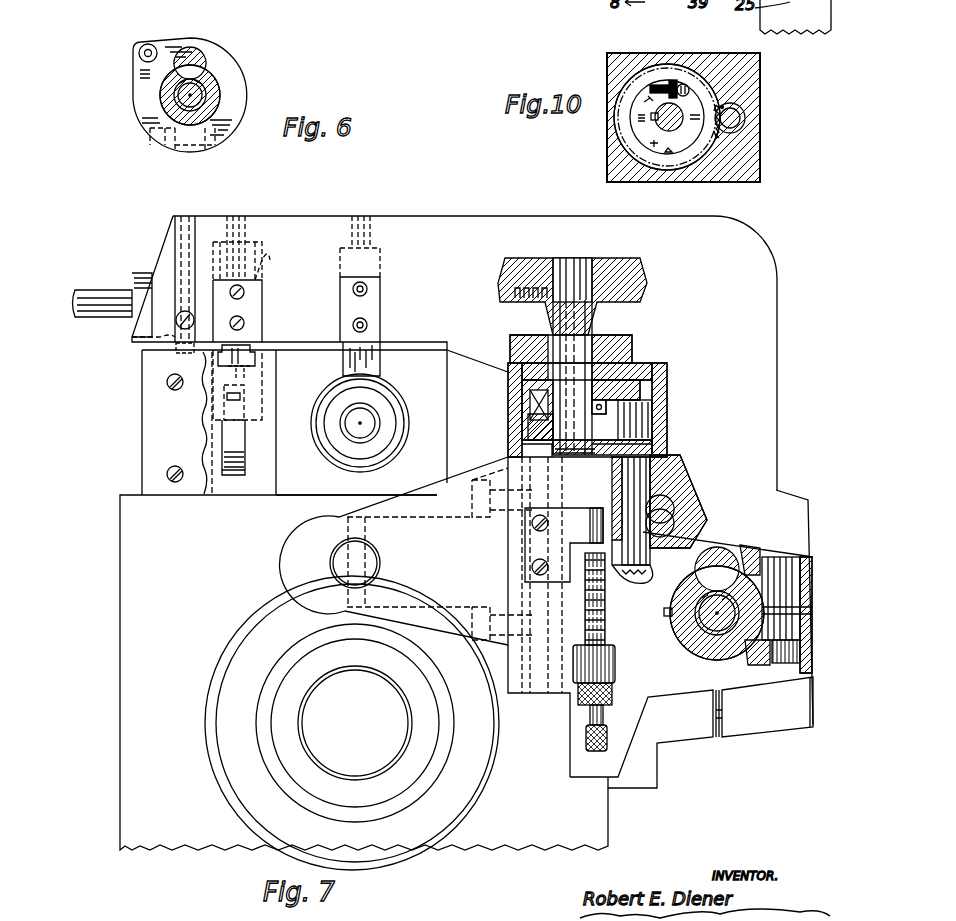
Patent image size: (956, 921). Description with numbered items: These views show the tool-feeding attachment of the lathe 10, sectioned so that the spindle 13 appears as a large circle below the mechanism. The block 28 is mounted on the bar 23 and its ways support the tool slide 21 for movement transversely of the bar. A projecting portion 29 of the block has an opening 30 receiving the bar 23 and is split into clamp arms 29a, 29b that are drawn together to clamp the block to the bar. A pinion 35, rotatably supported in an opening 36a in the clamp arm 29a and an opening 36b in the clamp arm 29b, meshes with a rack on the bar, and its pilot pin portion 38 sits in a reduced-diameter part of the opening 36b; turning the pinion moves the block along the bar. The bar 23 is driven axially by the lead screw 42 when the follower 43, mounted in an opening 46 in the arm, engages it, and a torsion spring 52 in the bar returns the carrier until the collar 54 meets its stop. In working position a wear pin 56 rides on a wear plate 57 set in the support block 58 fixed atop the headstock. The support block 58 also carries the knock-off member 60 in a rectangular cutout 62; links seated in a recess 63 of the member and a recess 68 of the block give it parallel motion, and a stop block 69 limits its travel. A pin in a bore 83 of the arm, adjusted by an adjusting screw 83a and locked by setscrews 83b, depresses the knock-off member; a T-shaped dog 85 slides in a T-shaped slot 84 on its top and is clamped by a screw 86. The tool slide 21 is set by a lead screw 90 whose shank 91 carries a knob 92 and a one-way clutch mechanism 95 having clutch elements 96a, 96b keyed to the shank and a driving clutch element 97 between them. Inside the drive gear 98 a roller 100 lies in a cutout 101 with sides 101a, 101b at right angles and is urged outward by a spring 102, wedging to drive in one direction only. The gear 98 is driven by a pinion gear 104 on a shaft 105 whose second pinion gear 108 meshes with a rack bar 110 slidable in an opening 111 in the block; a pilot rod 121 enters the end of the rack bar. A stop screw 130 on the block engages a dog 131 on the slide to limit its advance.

In FIG. 7, the lathe 10 is at (500, 404).
In FIG. 7, the spindle 13 is at (270, 758).
In FIG. 7, the tool slide 21 is at (570, 715).
In FIG. 6, the bar 23 is at (220, 100).
In FIG. 7, the bar 23 is at (712, 648).
In FIG. 7, the block 28 is at (628, 712).
In FIG. 7, the projecting portion 29 is at (712, 692).
In FIG. 7, the clamp arm 29a is at (814, 580).
In FIG. 7, the clamp arm 29b is at (806, 690).
In FIG. 7, the opening 30 is at (728, 552).
In FIG. 7, the pinion 35 is at (800, 594).
In FIG. 7, the opening 36a is at (796, 555).
In FIG. 7, the opening 36b is at (778, 682).
In FIG. 7, the pilot pin portion 38 is at (802, 647).
In FIG. 7, the lead screw 42 is at (392, 460).
In FIG. 7, the follower 43 is at (378, 366).
In FIG. 7, the opening 46 is at (382, 318).
In FIG. 6, the torsion spring 52 is at (200, 72).
In FIG. 7, the torsion spring 52 is at (680, 640).
In FIG. 6, the collar 54 is at (196, 40).
In FIG. 7, the wear pin 56 is at (130, 340).
In FIG. 7, the wear plate 57 is at (182, 352).
In FIG. 7, the support block 58 is at (242, 490).
In FIG. 7, the knock-off member 60 is at (222, 420).
In FIG. 7, the cutout 62 is at (224, 424).
In FIG. 7, the recess 63 is at (262, 426).
In FIG. 7, the recess 68 is at (220, 458).
In FIG. 7, the stop block 69 is at (140, 476).
In FIG. 7, the bore 83 is at (244, 240).
In FIG. 7, the adjusting screw 83a is at (235, 214).
In FIG. 7, the setscrews 83b is at (245, 321).
In FIG. 7, the T-shaped slot 84 is at (258, 370).
In FIG. 7, the T-shaped dog 85 is at (258, 358).
In FIG. 7, the screw 86 is at (222, 388).
In FIG. 7, the lead screw 90 is at (580, 662).
In FIG. 10, the shank 91 is at (660, 128).
In FIG. 7, the shank 91 is at (600, 338).
In FIG. 7, the knob 92 is at (635, 272).
In FIG. 7, the one-way clutch mechanism 95 is at (612, 382).
In FIG. 7, the clutch element 96a is at (520, 368).
In FIG. 7, the clutch element 96b is at (530, 448).
In FIG. 10, the driving clutch element 97 is at (640, 126).
In FIG. 7, the driving clutch element 97 is at (536, 412).
In FIG. 10, the drive gear 98 is at (615, 140).
In FIG. 7, the drive gear 98 is at (612, 404).
In FIG. 10, the roller 100 is at (672, 88).
In FIG. 10, the cutout 101 is at (690, 90).
In FIG. 10, the side 101a is at (671, 140).
In FIG. 10, the side 101b is at (666, 85).
In FIG. 10, the spring 102 is at (650, 88).
In FIG. 10, the pinion gear 104 is at (740, 126).
In FIG. 7, the pinion gear 104 is at (630, 398).
In FIG. 7, the shaft 105 is at (670, 462).
In FIG. 7, the pinion gear 108 is at (620, 580).
In FIG. 7, the rack bar 110 is at (670, 520).
In FIG. 7, the opening 111 is at (680, 545).
In FIG. 6, the pilot rod 121 is at (163, 18).
In FIG. 7, the stop screw 130 is at (612, 648).
In FIG. 7, the dog 131 is at (598, 514).